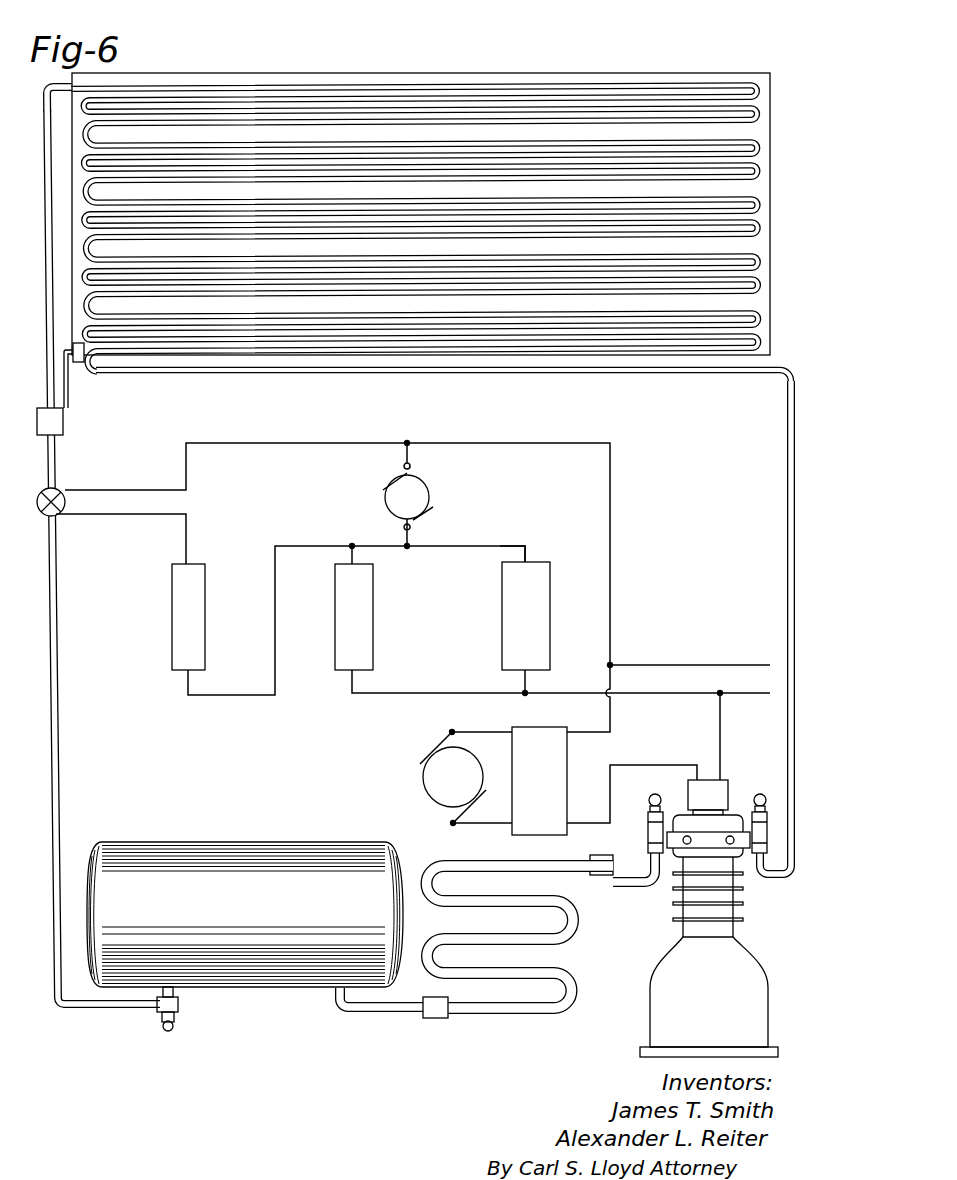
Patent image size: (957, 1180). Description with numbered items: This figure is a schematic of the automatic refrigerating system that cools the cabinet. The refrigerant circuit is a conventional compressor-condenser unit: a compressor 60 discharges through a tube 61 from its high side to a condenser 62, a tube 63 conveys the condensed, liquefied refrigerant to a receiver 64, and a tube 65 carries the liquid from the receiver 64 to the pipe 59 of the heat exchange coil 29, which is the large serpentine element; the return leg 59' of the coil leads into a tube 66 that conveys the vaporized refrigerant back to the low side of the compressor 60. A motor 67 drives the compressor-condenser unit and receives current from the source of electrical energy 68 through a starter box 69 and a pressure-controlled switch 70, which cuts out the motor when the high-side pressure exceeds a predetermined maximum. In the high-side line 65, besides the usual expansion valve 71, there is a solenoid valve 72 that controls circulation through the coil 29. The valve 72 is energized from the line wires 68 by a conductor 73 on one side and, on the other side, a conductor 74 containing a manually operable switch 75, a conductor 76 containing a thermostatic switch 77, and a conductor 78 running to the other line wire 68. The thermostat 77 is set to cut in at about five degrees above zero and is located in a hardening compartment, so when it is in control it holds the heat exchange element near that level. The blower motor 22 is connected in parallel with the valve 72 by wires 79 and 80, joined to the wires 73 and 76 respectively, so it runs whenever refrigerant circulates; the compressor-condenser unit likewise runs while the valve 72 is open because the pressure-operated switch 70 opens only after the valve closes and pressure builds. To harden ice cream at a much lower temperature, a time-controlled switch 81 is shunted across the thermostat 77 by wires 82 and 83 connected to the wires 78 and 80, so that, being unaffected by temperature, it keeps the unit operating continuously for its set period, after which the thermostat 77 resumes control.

The heat exchange coil 29 is at (515, 104).
The pipe 59 is at (46, 85).
The return pipe 59' is at (443, 393).
The compressor 60 is at (735, 977).
The tube 61 is at (624, 888).
The condenser 62 is at (576, 934).
The tube 63 is at (398, 1014).
The receiver 64 is at (240, 850).
The tube 65 is at (58, 713).
The tube 66 is at (787, 536).
The motor 67 is at (426, 776).
The source of electrical energy 68 is at (745, 693).
The starter box 69 is at (567, 765).
The pressure-controlled switch 70 is at (712, 780).
The expansion valve 71 is at (63, 422).
The solenoid valve 72 is at (62, 496).
The conductor 73 is at (330, 443).
The conductor 74 is at (150, 516).
The manually operable switch 75 is at (172, 606).
The conductor 76 is at (240, 690).
The thermostatic switch 77 is at (335, 626).
The conductor 78 is at (440, 693).
The wire 79 is at (404, 466).
The blower motor 22 is at (430, 495).
The wire 80 is at (413, 530).
The time-controlled switch 81 is at (550, 608).
The wire 82 is at (525, 686).
The wire 83 is at (525, 548).